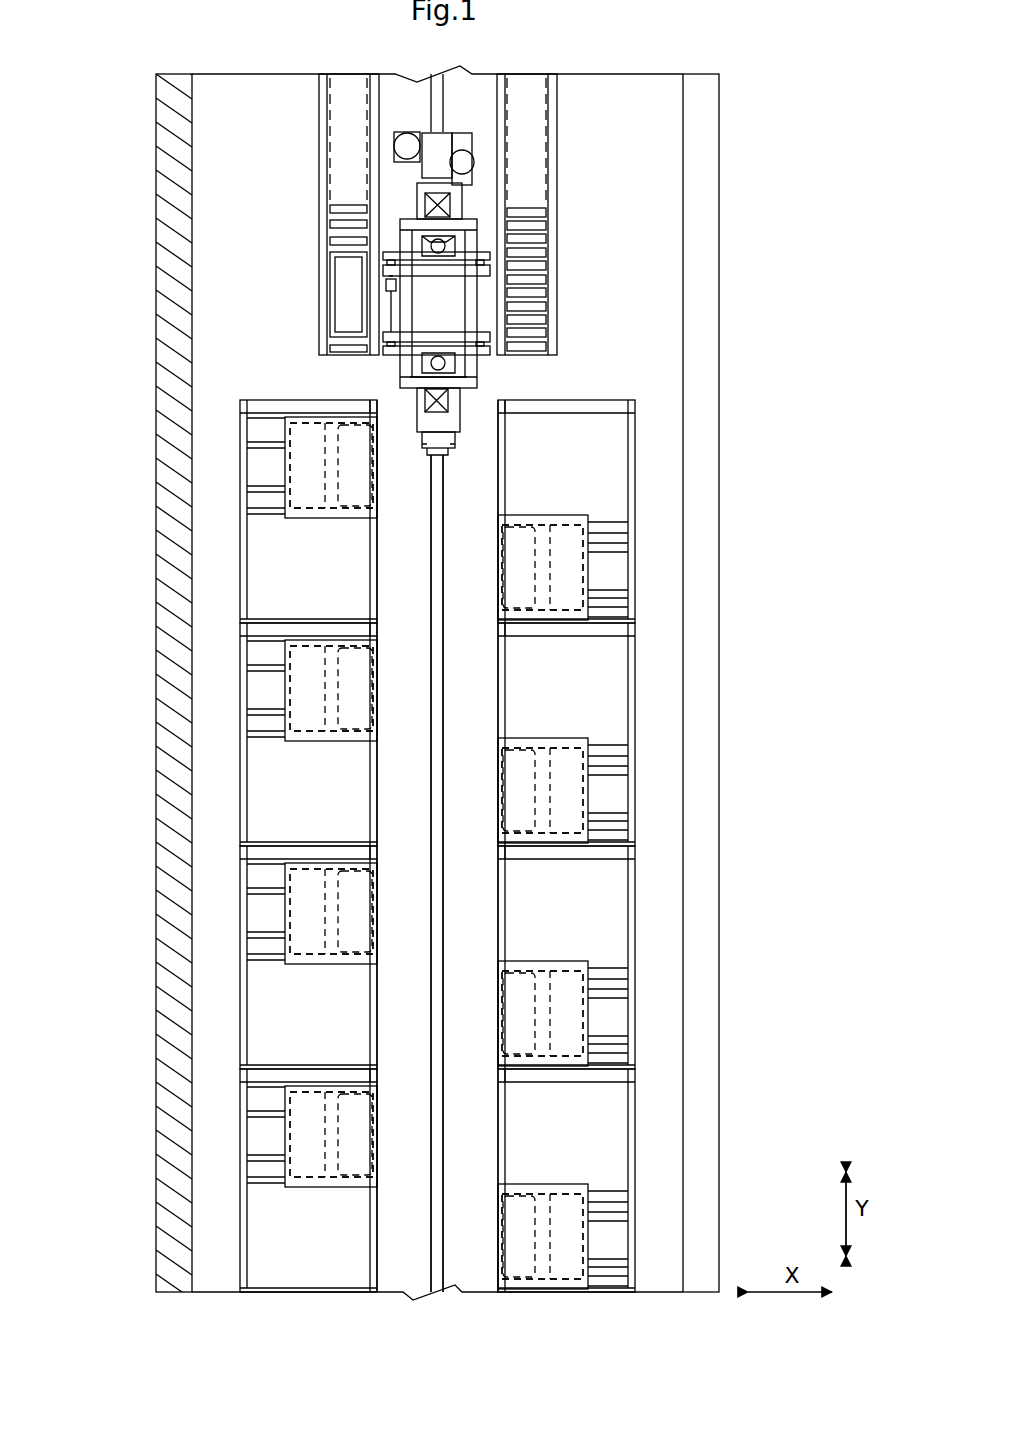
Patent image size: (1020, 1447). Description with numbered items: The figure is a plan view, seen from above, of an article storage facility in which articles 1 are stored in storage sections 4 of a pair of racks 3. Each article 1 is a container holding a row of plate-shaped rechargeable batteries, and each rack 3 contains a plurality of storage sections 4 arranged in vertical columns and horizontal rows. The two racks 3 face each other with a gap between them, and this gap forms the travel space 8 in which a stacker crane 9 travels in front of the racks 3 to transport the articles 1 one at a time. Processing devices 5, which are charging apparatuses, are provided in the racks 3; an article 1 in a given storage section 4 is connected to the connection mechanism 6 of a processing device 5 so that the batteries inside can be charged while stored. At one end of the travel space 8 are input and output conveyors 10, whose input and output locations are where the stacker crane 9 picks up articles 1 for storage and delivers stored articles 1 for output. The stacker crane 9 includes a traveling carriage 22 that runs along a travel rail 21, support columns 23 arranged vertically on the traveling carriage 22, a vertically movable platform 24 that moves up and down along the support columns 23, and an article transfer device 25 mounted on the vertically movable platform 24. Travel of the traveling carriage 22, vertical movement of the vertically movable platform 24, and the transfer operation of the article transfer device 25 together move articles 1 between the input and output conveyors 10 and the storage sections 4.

The article 1 is at (337, 288).
The rack 3 is at (212, 955).
The storage section 4 is at (382, 495).
The processing device 5 is at (258, 572).
The connection mechanism 6 is at (290, 692).
The travel space 8 is at (483, 737).
The stacker crane 9 is at (482, 198).
The input and output conveyor 10 is at (318, 152).
The travel rail 21 is at (437, 1218).
The traveling carriage 22 is at (462, 418).
The support column 23 is at (430, 208).
The vertically movable platform 24 is at (470, 365).
The article transfer device 25 is at (398, 340).